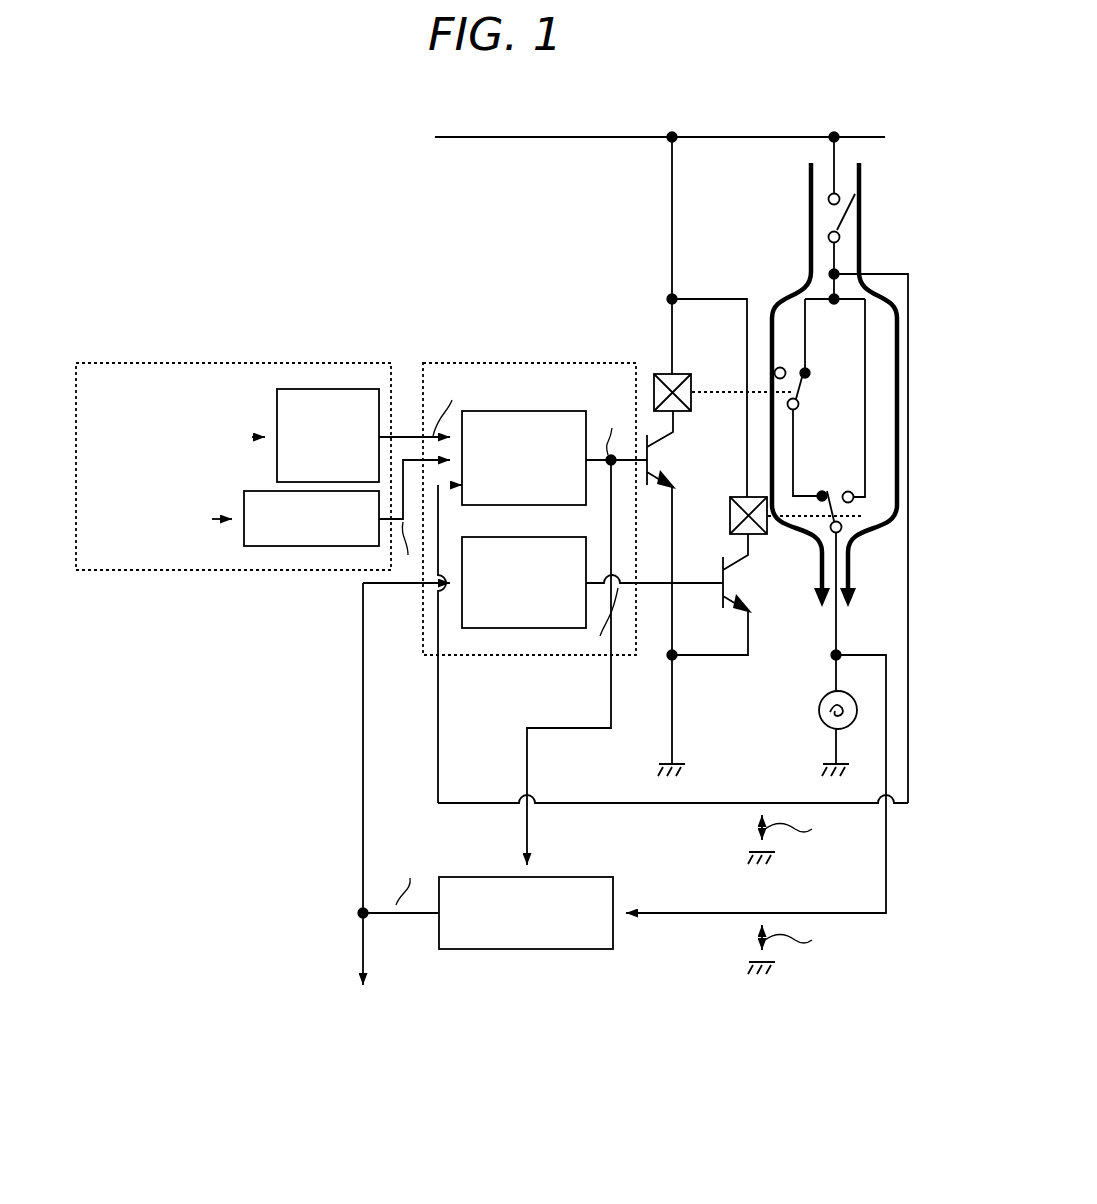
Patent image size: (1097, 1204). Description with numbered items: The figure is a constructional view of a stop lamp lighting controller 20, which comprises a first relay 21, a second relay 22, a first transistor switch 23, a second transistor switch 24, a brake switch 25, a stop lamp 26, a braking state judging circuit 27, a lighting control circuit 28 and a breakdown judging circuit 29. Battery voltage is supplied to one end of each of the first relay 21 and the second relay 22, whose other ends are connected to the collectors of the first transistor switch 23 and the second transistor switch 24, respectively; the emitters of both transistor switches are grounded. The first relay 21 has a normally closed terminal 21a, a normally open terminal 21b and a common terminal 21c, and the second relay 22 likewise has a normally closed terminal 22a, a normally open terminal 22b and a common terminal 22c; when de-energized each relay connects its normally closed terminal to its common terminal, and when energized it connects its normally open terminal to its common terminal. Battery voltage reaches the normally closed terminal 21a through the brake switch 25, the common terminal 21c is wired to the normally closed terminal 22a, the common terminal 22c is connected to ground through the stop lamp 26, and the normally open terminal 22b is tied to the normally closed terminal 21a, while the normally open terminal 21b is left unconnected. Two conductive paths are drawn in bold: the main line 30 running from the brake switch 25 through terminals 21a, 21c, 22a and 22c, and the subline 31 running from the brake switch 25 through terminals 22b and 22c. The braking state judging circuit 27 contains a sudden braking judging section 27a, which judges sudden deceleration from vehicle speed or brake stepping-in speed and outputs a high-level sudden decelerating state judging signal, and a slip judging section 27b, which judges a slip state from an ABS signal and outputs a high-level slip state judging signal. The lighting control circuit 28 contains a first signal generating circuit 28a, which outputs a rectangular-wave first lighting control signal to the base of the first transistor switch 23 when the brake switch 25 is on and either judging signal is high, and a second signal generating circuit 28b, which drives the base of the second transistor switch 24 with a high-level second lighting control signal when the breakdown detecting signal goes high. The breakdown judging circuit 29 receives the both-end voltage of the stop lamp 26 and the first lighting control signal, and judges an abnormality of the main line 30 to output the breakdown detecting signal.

The stop lamp lighting controller 20 is at (492, 533).
The first relay 21 is at (667, 372).
The normally closed terminal of first relay 21a is at (810, 372).
The normally open terminal of first relay 21b is at (774, 370).
The common terminal of first relay 21c is at (798, 406).
The second relay 22 is at (730, 510).
The normally closed terminal of second relay 22a is at (820, 490).
The normally open terminal of second relay 22b is at (851, 506).
The common terminal of second relay 22c is at (830, 534).
The first transistor switch 23 is at (666, 452).
The second transistor switch 24 is at (744, 584).
The brake switch 25 is at (826, 218).
The stop lamp 26 is at (819, 705).
The braking state judging circuit 27 is at (150, 362).
The sudden braking judging section 27a is at (318, 389).
The slip judging section 27b is at (298, 546).
The lighting control circuit 28 is at (583, 362).
The first signal generating circuit 28a is at (516, 411).
The second signal generating circuit 28b is at (520, 537).
The breakdown judging circuit 29 is at (556, 950).
The main line 30 is at (805, 290).
The subline 31 is at (868, 290).